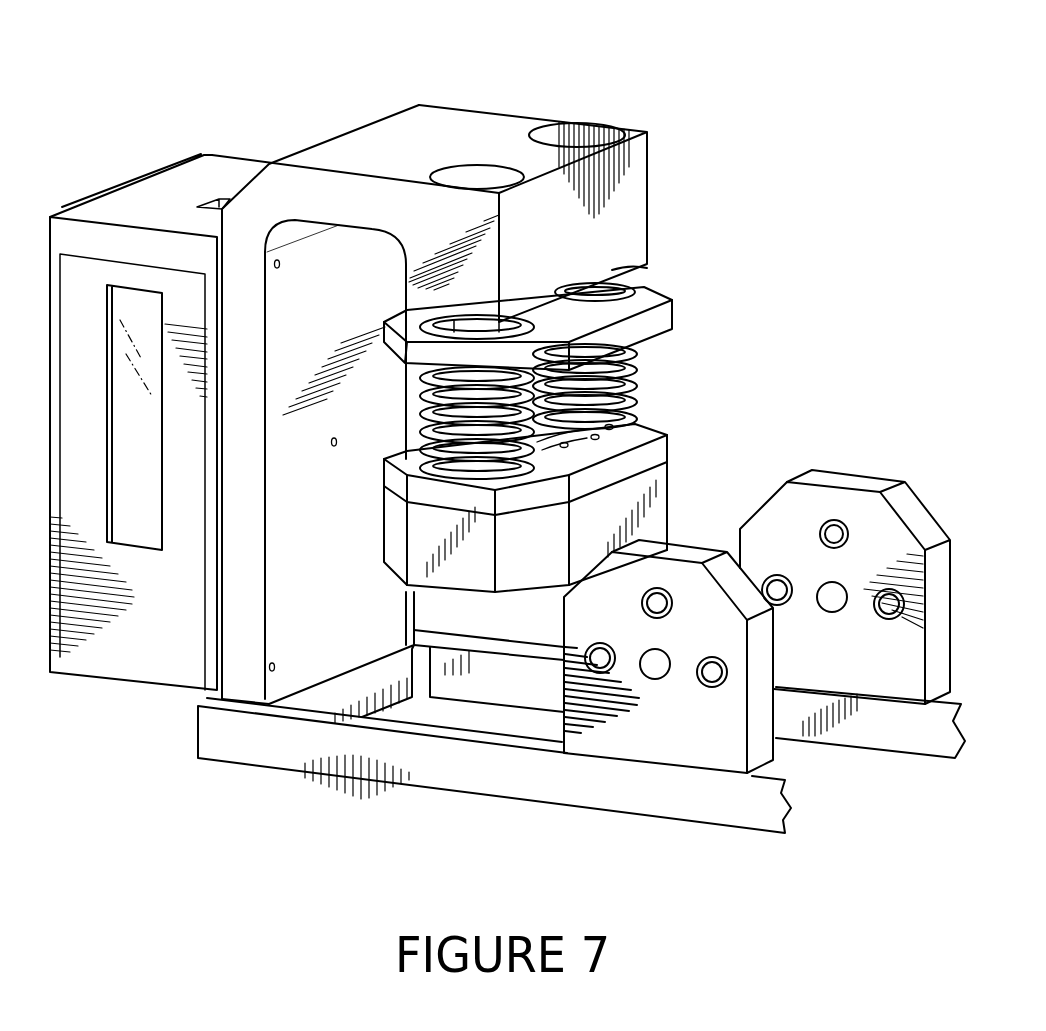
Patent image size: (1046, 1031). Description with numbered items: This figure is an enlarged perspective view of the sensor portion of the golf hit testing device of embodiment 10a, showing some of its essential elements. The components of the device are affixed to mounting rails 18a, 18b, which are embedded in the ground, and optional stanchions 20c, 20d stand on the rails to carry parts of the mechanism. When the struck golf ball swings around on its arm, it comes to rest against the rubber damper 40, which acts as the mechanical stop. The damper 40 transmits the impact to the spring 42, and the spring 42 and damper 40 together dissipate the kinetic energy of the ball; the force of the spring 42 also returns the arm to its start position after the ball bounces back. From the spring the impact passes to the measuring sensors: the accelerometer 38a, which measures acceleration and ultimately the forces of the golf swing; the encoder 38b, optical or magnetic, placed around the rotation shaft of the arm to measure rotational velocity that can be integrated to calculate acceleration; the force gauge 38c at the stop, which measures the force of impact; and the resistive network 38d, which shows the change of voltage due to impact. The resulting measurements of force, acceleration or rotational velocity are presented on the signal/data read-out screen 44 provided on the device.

The embodiment 10a is at (815, 83).
The signal/data read-out screen 44 is at (139, 305).
The spring 42 is at (652, 366).
The accelerometer 38a is at (657, 456).
The encoder 38b is at (683, 361).
The force gauge 38c is at (626, 338).
The resistive network 38d is at (694, 330).
The damper 40 is at (422, 529).
The stanchion 20c is at (862, 479).
The stanchion 20d is at (694, 588).
The mounting rail 18a is at (908, 728).
The mounting rail 18b is at (303, 742).